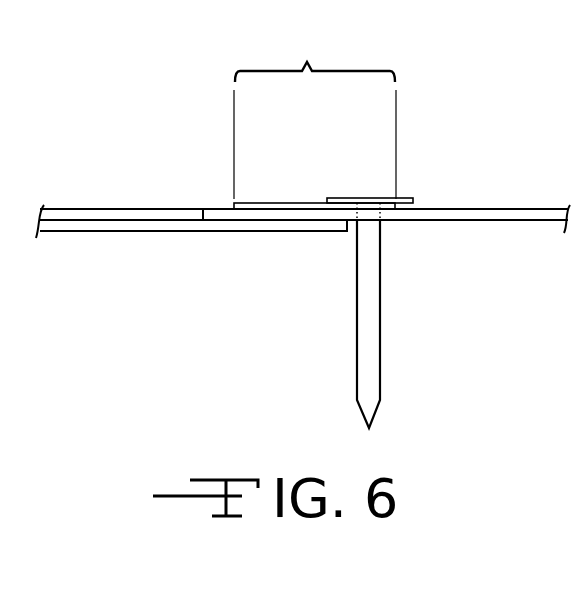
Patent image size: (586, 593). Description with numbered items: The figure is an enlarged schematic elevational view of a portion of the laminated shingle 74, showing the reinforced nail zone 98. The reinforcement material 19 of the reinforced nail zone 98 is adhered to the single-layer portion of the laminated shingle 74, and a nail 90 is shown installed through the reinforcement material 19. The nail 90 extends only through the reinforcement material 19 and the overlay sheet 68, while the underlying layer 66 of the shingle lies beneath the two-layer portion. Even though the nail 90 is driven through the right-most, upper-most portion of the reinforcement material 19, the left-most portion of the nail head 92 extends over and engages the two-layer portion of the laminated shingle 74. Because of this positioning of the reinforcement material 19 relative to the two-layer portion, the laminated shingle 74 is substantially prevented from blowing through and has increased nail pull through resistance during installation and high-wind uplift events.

The reinforcement material 19 is at (262, 202).
The lower bar member 66 is at (127, 232).
The overlay sheet 68 is at (490, 211).
The laminated shingle 74 is at (148, 168).
The nail 90 is at (381, 280).
The nail head 92 is at (347, 197).
The reinforced nail zone 98 is at (315, 114).